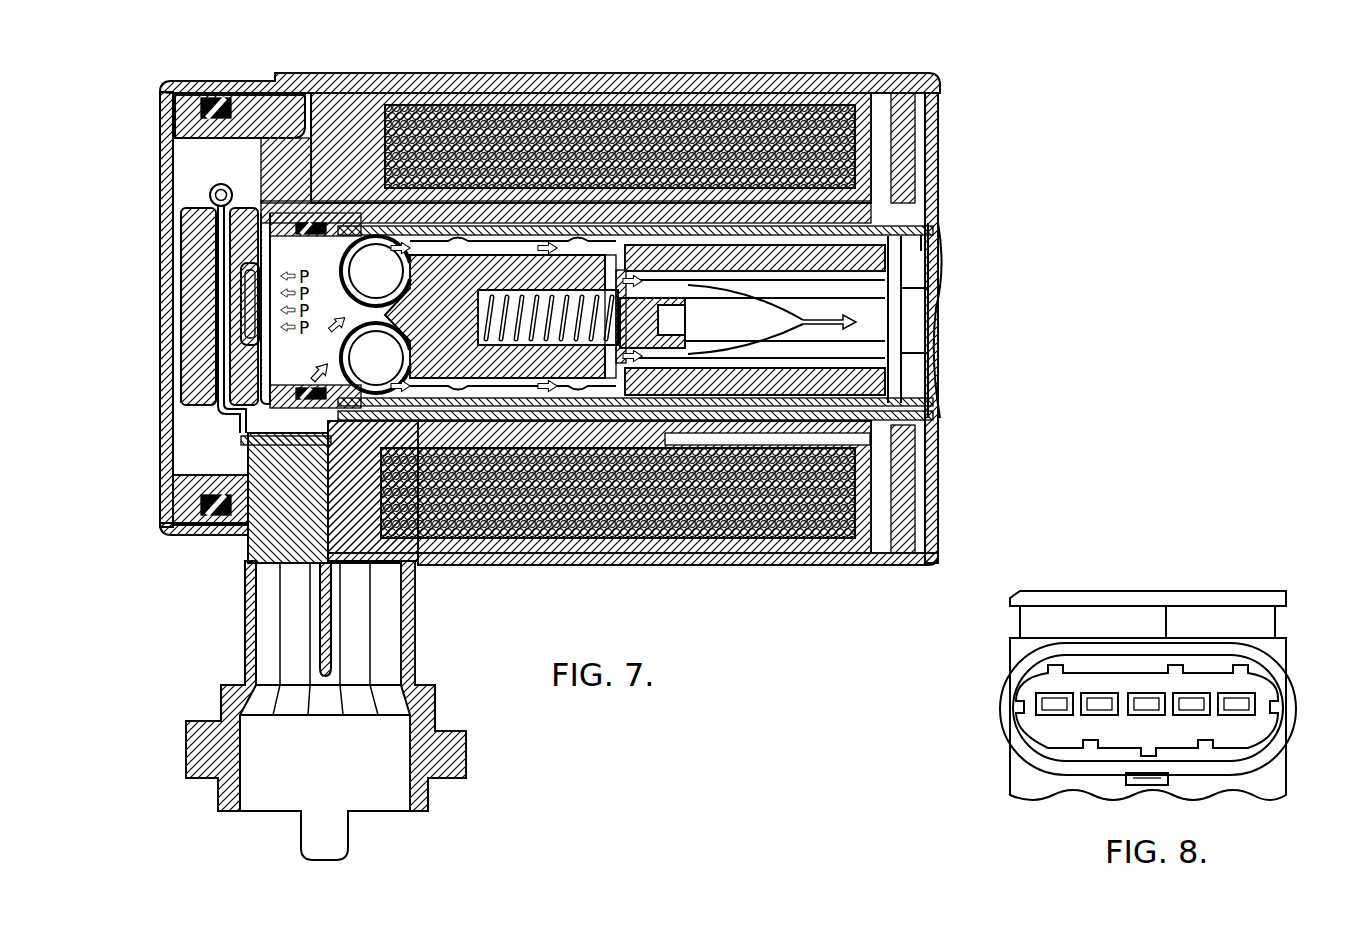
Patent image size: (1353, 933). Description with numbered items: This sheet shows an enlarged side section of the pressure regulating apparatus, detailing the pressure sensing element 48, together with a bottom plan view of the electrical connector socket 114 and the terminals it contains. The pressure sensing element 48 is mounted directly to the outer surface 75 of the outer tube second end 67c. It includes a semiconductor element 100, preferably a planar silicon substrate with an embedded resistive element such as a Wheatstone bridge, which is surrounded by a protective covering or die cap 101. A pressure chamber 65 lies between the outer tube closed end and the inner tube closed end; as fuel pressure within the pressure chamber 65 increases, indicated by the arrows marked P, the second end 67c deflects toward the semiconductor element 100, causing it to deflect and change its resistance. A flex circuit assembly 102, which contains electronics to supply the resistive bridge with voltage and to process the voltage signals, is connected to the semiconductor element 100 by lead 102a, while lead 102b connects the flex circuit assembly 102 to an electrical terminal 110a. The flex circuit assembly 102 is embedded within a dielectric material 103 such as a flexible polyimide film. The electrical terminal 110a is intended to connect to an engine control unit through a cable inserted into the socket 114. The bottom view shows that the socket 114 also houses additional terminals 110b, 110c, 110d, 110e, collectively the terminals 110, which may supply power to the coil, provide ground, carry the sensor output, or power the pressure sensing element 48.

In FIG. 7, the pressure sensing element 48 is at (180, 412).
In FIG. 7, the pressure chamber 65 is at (273, 250).
In FIG. 7, the outer tube second end 67c is at (262, 195).
In FIG. 7, the outer surface 75 is at (253, 317).
In FIG. 7, the semiconductor element 100 is at (237, 297).
In FIG. 7, the die cap 101 is at (237, 263).
In FIG. 7, the flex circuit assembly 102 is at (200, 187).
In FIG. 7, the lead 102a is at (315, 440).
In FIG. 7, the lead 102b is at (227, 417).
In FIG. 7, the dielectric material 103 is at (178, 213).
In FIG. 7, the connector terminals 110 is at (285, 605).
In FIG. 7, the electrical terminal 110a is at (255, 530).
In FIG. 8, the electrical terminal 110a is at (1045, 683).
In FIG. 8, the terminal 110b is at (1100, 683).
In FIG. 8, the terminal 110c is at (1137, 683).
In FIG. 8, the terminal 110d is at (1182, 683).
In FIG. 8, the terminal 110e is at (1240, 683).
In FIG. 7, the socket 114 is at (403, 620).
In FIG. 8, the socket 114 is at (1025, 752).